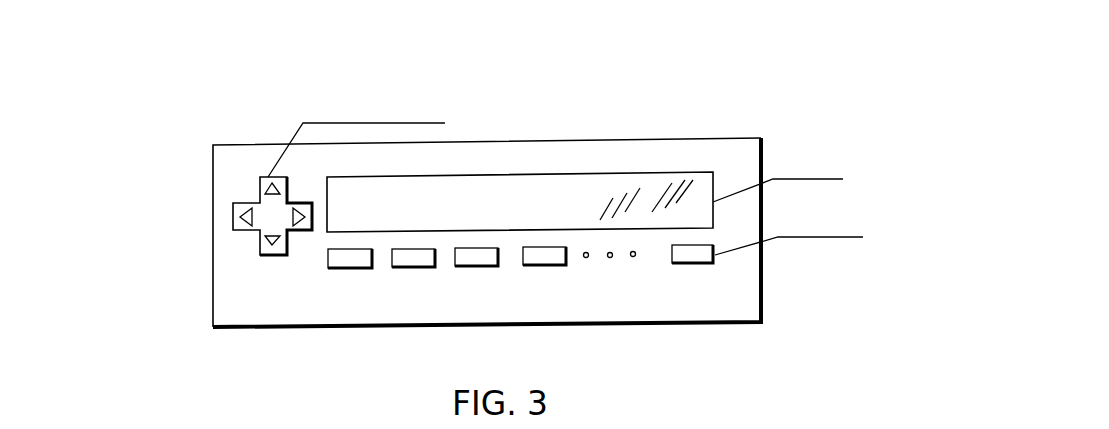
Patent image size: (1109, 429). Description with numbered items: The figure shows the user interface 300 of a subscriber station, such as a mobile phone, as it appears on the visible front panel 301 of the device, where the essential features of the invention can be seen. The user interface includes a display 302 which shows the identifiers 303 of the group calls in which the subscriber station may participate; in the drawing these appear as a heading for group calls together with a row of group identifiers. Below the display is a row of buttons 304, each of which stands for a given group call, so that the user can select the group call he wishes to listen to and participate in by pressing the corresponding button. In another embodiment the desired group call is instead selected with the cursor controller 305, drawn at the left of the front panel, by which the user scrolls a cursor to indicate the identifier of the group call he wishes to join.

The user interface 300 is at (630, 95).
The front panel 301 is at (535, 141).
The display 302 is at (693, 173).
The identifiers 303 is at (507, 212).
The buttons 304 is at (604, 262).
The cursor controller 305 is at (258, 202).